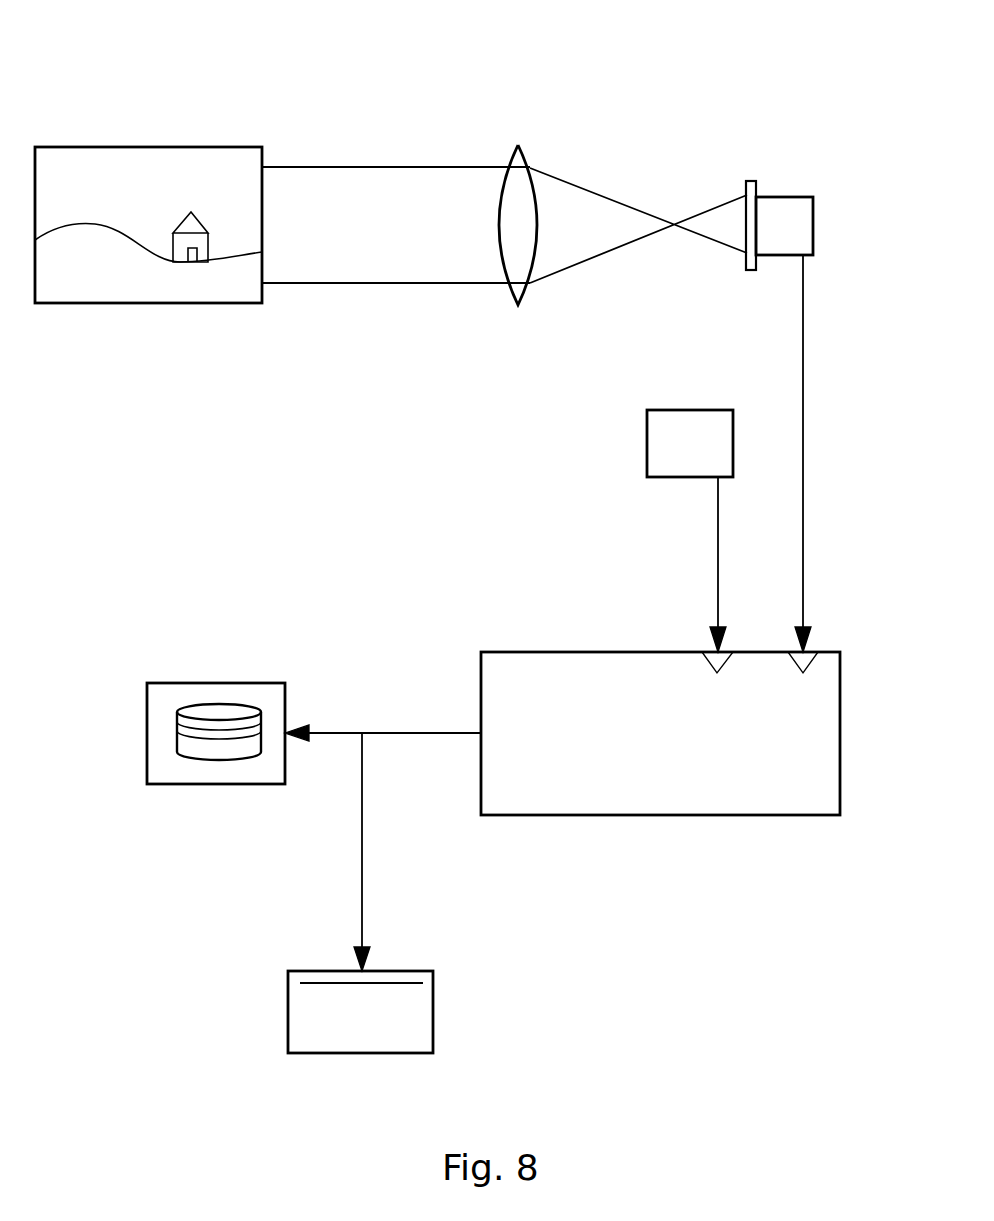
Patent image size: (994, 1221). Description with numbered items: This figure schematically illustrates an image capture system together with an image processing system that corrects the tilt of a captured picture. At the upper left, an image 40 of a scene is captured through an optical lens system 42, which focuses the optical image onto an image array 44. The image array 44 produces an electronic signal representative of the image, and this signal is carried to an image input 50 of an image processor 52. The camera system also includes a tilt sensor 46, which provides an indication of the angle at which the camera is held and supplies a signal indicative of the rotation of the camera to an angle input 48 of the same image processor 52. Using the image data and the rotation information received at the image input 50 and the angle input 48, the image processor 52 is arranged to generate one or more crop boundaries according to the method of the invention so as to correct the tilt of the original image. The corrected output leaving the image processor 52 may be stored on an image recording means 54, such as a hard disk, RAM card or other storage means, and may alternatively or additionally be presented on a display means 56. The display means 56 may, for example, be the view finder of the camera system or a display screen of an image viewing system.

The image 40 is at (172, 147).
The optical lens system 42 is at (510, 153).
The image array 44 is at (787, 197).
The tilt sensor 46 is at (647, 450).
The angle input 48 is at (712, 662).
The image input 50 is at (805, 660).
The image processor 52 is at (813, 752).
The image recording means 54 is at (147, 742).
The display means 56 is at (435, 1018).